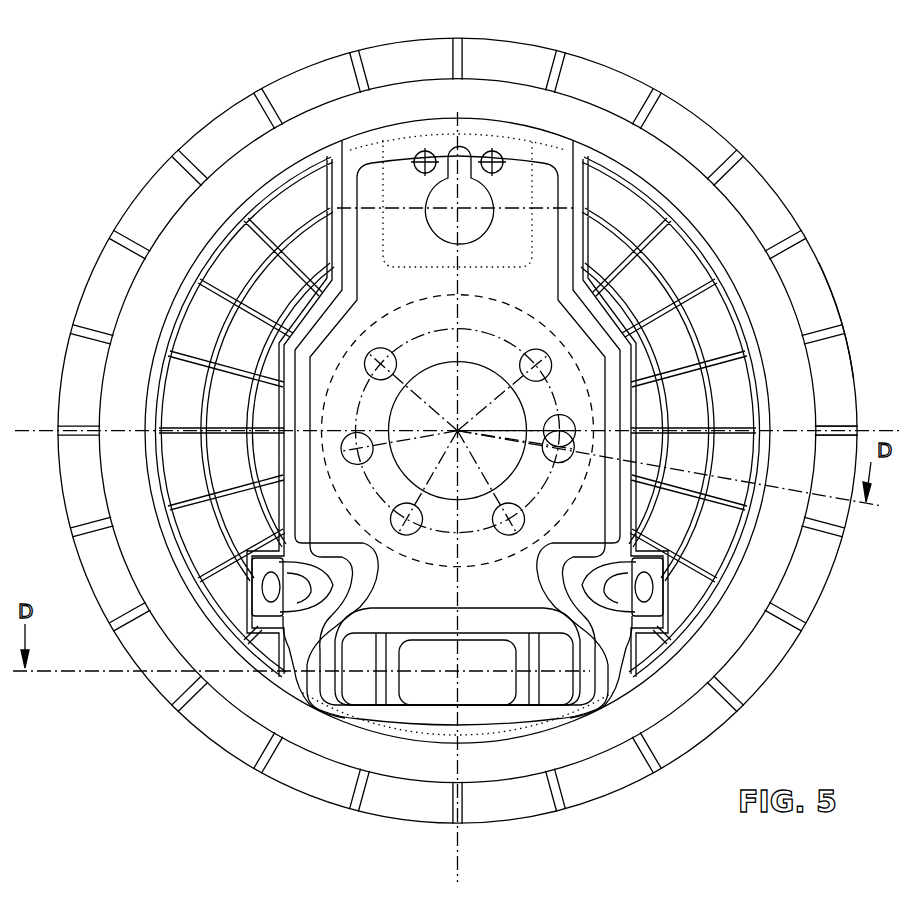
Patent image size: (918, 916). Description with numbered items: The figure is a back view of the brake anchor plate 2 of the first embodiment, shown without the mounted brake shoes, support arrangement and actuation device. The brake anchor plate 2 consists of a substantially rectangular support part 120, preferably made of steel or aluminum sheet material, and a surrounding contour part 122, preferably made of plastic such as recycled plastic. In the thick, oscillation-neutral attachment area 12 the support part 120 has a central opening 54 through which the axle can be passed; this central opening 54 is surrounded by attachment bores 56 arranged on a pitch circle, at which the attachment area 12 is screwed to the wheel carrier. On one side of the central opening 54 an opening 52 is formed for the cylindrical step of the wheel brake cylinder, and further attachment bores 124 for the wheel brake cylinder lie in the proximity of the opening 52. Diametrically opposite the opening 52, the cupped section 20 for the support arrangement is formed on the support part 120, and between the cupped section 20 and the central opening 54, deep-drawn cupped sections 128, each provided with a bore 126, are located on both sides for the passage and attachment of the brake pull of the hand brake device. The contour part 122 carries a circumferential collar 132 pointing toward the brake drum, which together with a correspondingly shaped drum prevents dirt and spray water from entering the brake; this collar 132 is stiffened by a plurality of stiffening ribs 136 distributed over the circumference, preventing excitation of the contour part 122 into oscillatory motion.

The brake anchor plate 2 is at (624, 72).
The attachment area 12 is at (545, 401).
The cupped section 20 is at (523, 700).
The opening 52 is at (478, 202).
The central opening 54 is at (486, 402).
The attachment bores 56 is at (537, 353).
The support part 120 is at (422, 587).
The contour part 122 is at (258, 165).
The attachment bores 124 is at (487, 150).
The bore 126 is at (272, 589).
The cupped sections 128 is at (310, 593).
The circumferential collar 132 is at (837, 302).
The stiffening ribs 136 is at (840, 427).